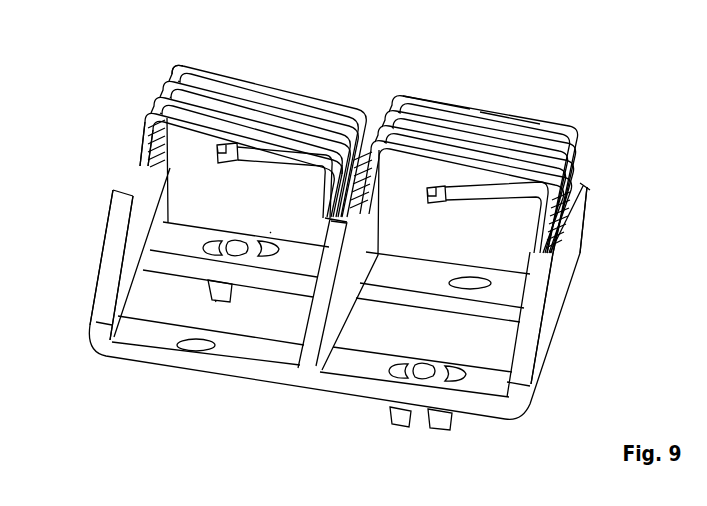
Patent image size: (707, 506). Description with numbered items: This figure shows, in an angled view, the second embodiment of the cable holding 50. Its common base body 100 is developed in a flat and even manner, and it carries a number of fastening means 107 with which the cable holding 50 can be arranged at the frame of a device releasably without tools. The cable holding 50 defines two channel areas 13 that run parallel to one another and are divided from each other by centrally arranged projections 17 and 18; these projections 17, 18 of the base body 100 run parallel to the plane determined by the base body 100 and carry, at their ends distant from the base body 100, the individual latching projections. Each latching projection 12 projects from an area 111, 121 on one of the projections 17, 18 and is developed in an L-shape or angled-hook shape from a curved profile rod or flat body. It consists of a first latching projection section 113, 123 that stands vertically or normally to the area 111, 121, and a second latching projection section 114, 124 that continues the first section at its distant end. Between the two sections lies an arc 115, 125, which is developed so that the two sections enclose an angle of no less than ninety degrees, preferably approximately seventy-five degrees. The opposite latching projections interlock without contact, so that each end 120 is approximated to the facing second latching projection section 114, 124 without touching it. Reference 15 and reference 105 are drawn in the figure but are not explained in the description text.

The latching projection 12 is at (518, 150).
The channel area 13 is at (284, 224).
The cavity 15 is at (190, 310).
The projection 17 is at (351, 236).
The projection 18 is at (95, 271).
The cable holding 50 is at (275, 72).
The common base body 100 is at (270, 372).
The housing part 105 is at (108, 492).
The fastening means 107 is at (240, 298).
The area 111 is at (127, 183).
The first latching projection section 113 is at (355, 191).
The second latching projection section 114 is at (440, 117).
The arc 115 is at (383, 94).
The end 120 is at (224, 166).
The area 121 is at (584, 188).
The first latching projection section 123 is at (579, 168).
The second latching projection section 124 is at (527, 130).
The arc 125 is at (580, 132).